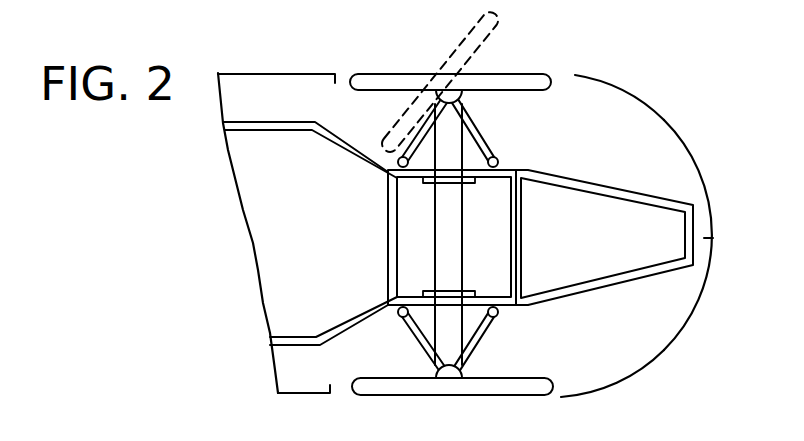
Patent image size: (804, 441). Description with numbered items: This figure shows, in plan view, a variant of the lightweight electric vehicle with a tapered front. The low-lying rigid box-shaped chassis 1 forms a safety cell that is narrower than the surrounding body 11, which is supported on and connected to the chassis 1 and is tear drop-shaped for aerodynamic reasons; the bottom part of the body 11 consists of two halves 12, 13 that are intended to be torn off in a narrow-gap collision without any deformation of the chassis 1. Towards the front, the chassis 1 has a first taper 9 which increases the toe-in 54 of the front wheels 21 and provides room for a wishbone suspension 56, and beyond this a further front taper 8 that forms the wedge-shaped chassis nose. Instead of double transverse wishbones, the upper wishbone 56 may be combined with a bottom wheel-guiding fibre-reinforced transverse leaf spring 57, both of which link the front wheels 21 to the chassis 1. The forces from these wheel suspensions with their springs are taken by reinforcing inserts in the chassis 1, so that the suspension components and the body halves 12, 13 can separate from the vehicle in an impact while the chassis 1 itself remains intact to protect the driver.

The chassis 1 is at (267, 130).
The front taper 8 is at (583, 296).
The first taper 9 is at (335, 332).
The body 11 is at (577, 75).
The body bottom part half 12 is at (641, 103).
The body bottom part half 13 is at (676, 341).
The front wheel 21 is at (403, 386).
The toe-in 54 is at (366, 137).
The wishbone suspension 56 is at (423, 340).
The transverse leaf spring 57 is at (452, 337).